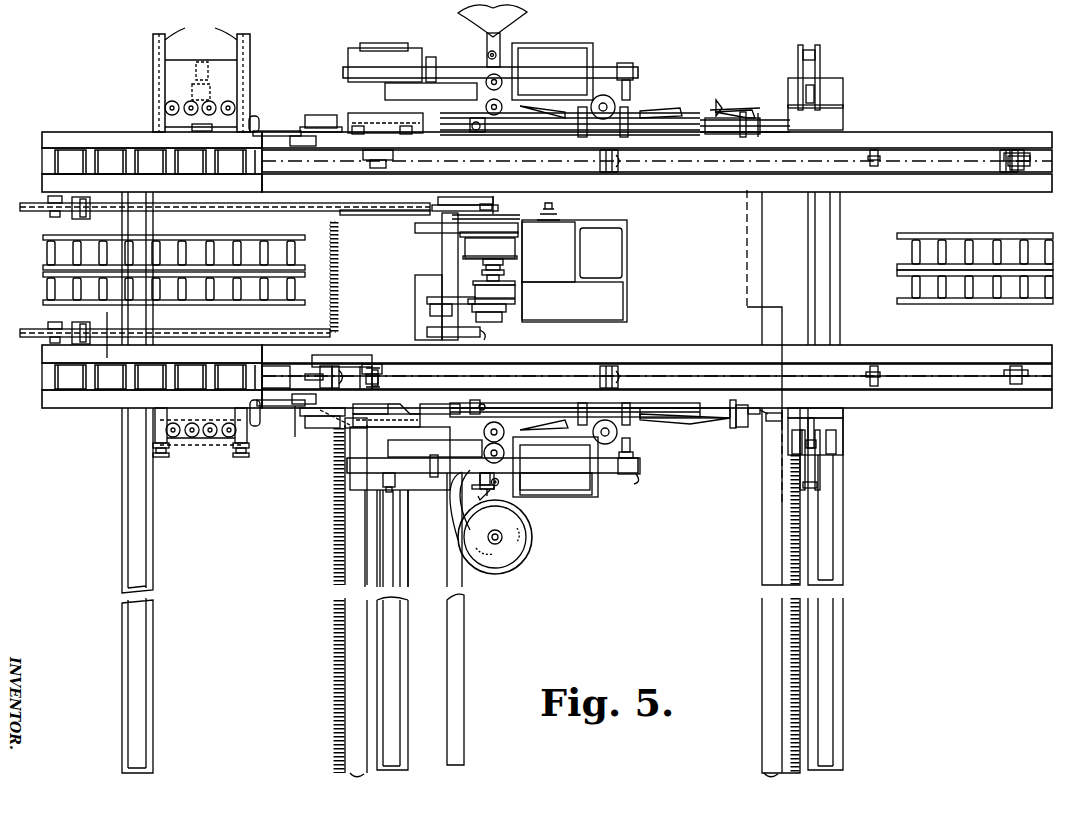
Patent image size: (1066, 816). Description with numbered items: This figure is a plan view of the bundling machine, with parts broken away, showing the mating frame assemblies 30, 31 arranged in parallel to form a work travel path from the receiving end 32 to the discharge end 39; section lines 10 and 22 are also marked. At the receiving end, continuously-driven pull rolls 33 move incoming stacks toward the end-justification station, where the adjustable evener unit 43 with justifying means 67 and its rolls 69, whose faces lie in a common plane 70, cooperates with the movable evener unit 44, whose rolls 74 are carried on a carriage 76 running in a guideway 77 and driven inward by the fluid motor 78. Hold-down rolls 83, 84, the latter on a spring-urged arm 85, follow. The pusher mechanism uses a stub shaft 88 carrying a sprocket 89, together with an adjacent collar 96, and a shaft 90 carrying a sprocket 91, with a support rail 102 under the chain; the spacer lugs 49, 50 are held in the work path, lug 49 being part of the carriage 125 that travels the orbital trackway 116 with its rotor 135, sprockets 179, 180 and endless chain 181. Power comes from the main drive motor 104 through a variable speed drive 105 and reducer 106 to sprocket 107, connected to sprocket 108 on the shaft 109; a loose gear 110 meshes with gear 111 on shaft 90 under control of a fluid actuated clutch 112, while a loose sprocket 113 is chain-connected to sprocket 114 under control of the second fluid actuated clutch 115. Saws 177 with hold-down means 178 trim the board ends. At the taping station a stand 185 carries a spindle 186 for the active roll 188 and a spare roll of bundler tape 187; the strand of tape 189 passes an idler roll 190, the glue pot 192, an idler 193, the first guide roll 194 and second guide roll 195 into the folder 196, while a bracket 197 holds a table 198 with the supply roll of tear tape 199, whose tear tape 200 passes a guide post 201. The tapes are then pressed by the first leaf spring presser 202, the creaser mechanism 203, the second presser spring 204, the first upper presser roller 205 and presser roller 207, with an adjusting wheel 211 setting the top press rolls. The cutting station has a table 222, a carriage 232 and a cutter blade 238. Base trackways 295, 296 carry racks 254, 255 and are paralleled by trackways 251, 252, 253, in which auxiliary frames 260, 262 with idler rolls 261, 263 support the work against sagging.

The section line 10- 10 is at (102, 317).
The section line 22- 22 is at (752, 187).
The frame assembly 30 is at (106, 114).
The frame assembly 31 is at (82, 424).
The receiving end 32 is at (22, 146).
The pull rolls 33 is at (134, 158).
The discharge end 39 is at (1056, 121).
The evener unit 43 is at (228, 464).
The movable evener unit 44 is at (262, 57).
The spacer lug 49 is at (340, 177).
The spacer lug 50 is at (344, 362).
The justifying means 67 is at (162, 456).
The roll 69 is at (226, 440).
The common plane 70 is at (202, 422).
The rolls 74 is at (188, 101).
The carriage 76 is at (222, 62).
The guideway 77 is at (215, 28).
The fluid motor 78 is at (218, 94).
The hold-down roll 83 is at (295, 136).
The hold-down roll 84 is at (296, 412).
The arm 85 is at (270, 408).
The stub shaft 88 is at (50, 217).
The sprocket 89 is at (8, 211).
The shaft 90 is at (450, 256).
The sprocket 91 is at (476, 198).
The rod collar 96 is at (76, 218).
The support rail 102 is at (292, 326).
The main drive motor 104 is at (612, 258).
The variable speed drive 105 is at (588, 306).
The reducer 106 is at (564, 268).
The sprocket 107 is at (560, 214).
The sprocket 108 is at (522, 216).
The shaft 109 is at (494, 204).
The gear 110 is at (520, 233).
The gear 111 is at (428, 236).
The fluid actuated clutch 112 is at (516, 248).
The sprocket 113 is at (514, 304).
The sprocket 114 is at (436, 298).
The second fluid actuated clutch 115 is at (518, 290).
The orbital trackway 116 is at (694, 400).
The carriage 125 is at (326, 368).
The rotor 135 is at (306, 378).
The saws 177 is at (330, 432).
The hold-down means 178 is at (362, 404).
The sprocket 179 is at (1028, 376).
The sprocket 180 is at (380, 368).
The endless chain 181 is at (944, 380).
The stand 185 is at (455, 458).
The spindle 186 is at (374, 488).
The spare roll of bundler tape 187 is at (356, 470).
The active roll 188 is at (452, 480).
The strand of tape 189 is at (608, 470).
The idler roll 190 is at (432, 482).
The glue pot 192 is at (576, 496).
The idler 193 is at (638, 480).
The first guide roll 194 is at (500, 482).
The second guide roll 195 is at (504, 425).
The folder 196 is at (524, 436).
The bracket 197 is at (504, 498).
The table 198 is at (506, 568).
The supply roll of tear tape 199 is at (512, 554).
The tear tape 200 is at (488, 500).
The guide post 201 is at (502, 486).
The first leaf spring presser 202 is at (586, 426).
The creaser mechanism 203 is at (626, 446).
The second presser spring 204 is at (636, 420).
The first upper presser roller 205 is at (676, 418).
The presser roller 207 is at (776, 410).
The adjusting wheel 211 is at (744, 404).
The table 222 is at (842, 440).
The carriage 232 is at (836, 448).
The cutter blade 238 is at (812, 424).
The trackway 251 is at (152, 546).
The trackway 252 is at (404, 666).
The trackway 253 is at (840, 660).
The rack 254 is at (332, 662).
The rack 255 is at (790, 660).
The auxiliary frame 260 is at (254, 238).
The idler rolls 261 is at (210, 250).
The auxiliary frame 262 is at (158, 302).
The idler rolls 263 is at (236, 296).
The base trackway 295 is at (356, 776).
The base trackway 296 is at (764, 773).